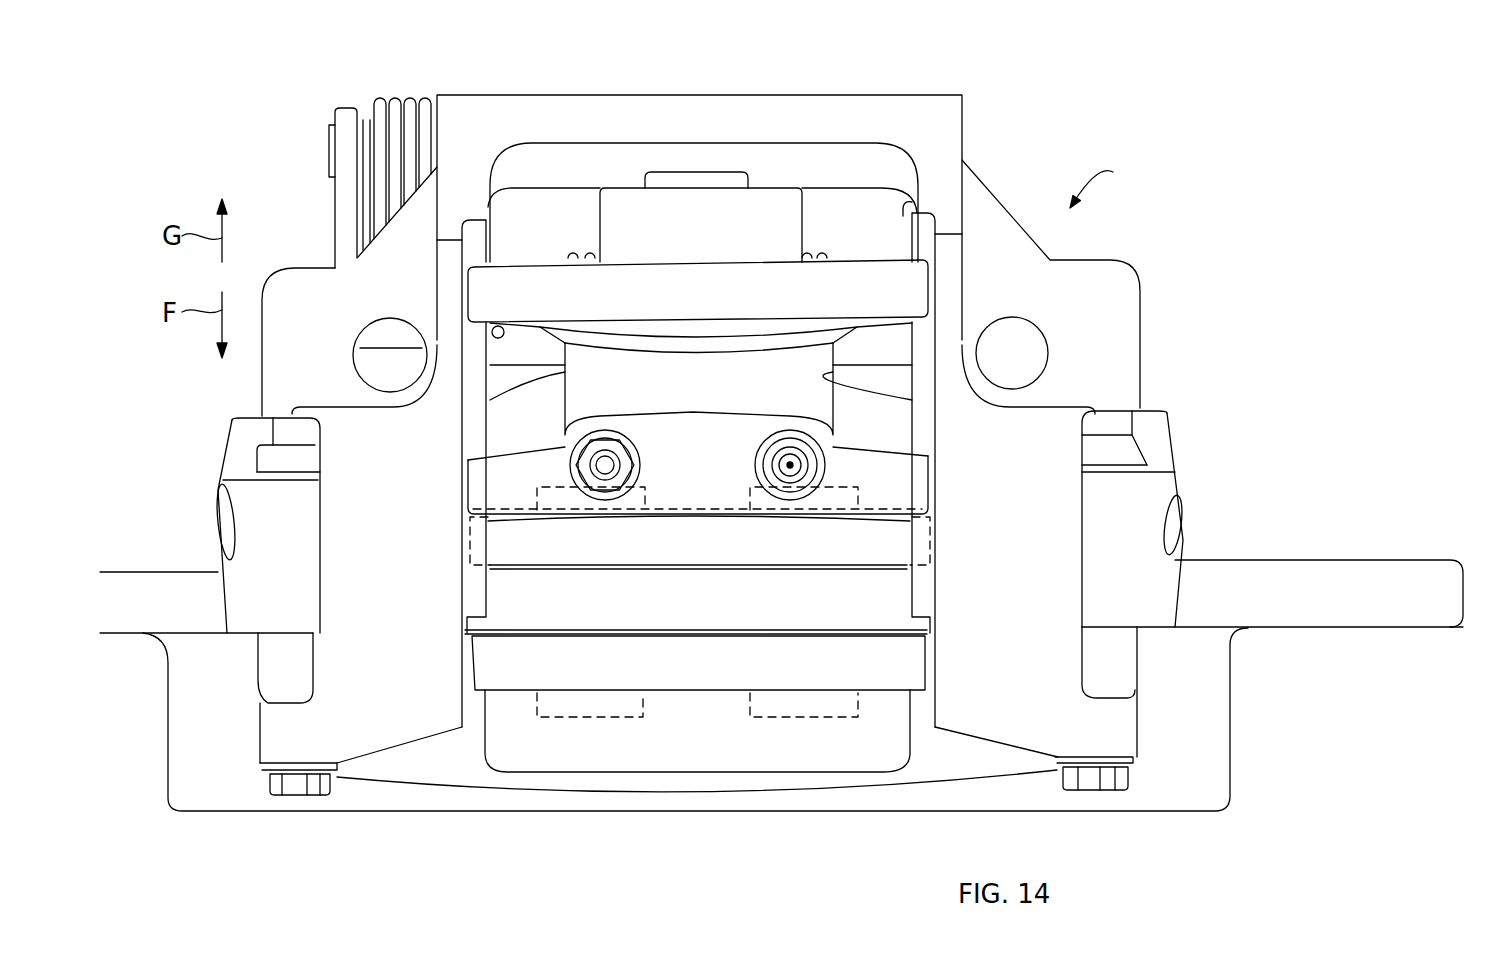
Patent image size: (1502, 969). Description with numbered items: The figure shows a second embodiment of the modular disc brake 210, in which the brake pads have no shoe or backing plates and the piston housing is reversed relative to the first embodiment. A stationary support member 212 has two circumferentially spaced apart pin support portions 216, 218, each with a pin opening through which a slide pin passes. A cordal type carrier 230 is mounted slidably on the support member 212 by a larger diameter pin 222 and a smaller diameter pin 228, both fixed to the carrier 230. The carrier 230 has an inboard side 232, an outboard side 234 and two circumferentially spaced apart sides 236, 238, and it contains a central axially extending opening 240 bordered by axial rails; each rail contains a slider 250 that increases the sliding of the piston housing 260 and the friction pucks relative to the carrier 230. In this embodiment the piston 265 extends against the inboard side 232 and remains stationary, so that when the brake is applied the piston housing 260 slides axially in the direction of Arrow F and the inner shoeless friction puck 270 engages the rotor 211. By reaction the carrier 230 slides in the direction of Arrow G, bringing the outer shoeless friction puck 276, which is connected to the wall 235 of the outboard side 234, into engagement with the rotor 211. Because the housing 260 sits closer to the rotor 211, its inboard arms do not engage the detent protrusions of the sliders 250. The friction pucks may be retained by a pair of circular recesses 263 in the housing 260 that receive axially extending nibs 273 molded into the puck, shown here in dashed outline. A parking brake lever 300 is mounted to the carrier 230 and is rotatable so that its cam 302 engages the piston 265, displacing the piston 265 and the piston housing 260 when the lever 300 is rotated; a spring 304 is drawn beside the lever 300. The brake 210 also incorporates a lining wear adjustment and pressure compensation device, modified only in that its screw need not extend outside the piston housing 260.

The modular disc brake 210 is at (1118, 181).
The rotor 211 is at (722, 613).
The support member 212 is at (1163, 427).
The pin support portion 216 is at (237, 525).
The pin support portion 218 is at (1165, 502).
The pin 222 is at (1100, 780).
The pin 228 is at (300, 784).
The carrier 230 is at (1140, 312).
The inboard side 232 is at (862, 173).
The outboard side 234 is at (747, 800).
The wall 235 is at (660, 690).
The side 236 is at (420, 643).
The side 238 is at (1037, 643).
The central axially extending opening 240 is at (905, 205).
The slider 250 is at (490, 540).
The piston housing 260 is at (785, 304).
The circular recess 263 is at (858, 490).
The piston 265 is at (738, 239).
The inner shoeless friction puck 270 is at (785, 554).
The nib 273 is at (537, 493).
The outer shoeless friction puck 276 is at (760, 674).
The parking brake lever 300 is at (345, 210).
The cam 302 is at (683, 178).
The spring 304 is at (373, 103).